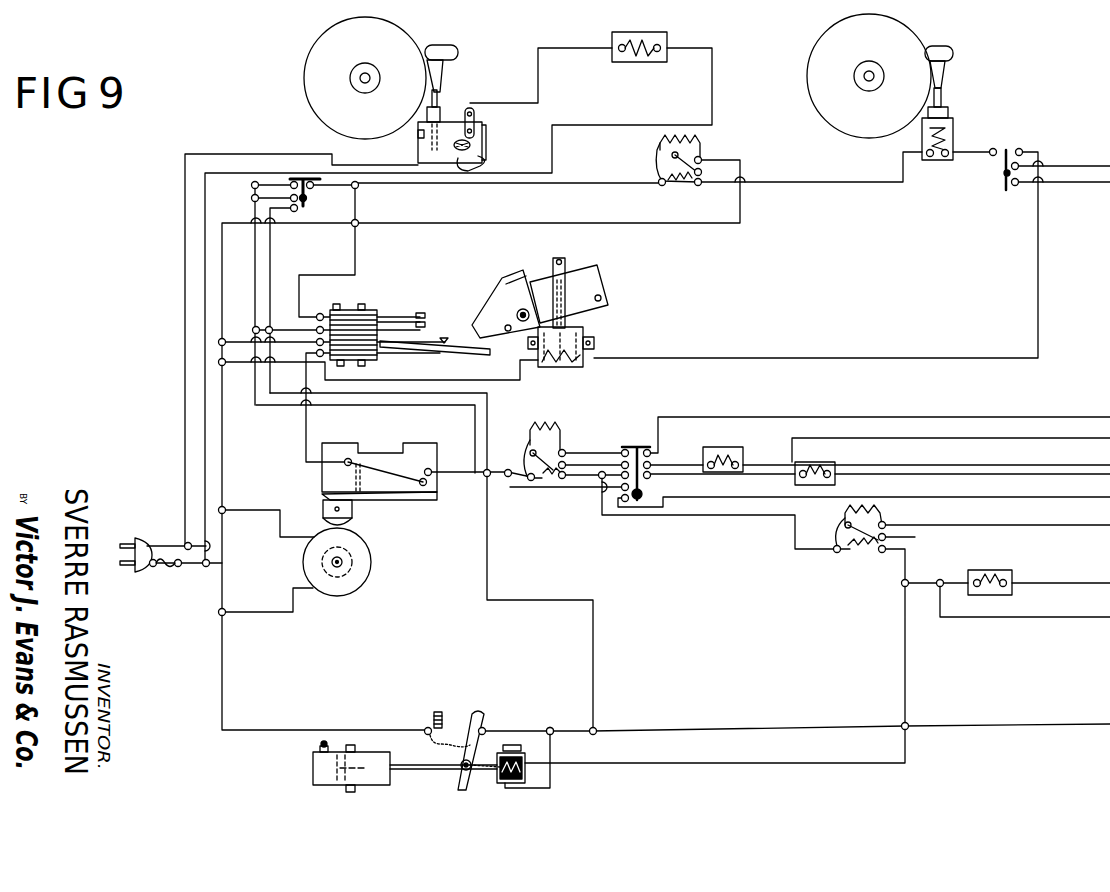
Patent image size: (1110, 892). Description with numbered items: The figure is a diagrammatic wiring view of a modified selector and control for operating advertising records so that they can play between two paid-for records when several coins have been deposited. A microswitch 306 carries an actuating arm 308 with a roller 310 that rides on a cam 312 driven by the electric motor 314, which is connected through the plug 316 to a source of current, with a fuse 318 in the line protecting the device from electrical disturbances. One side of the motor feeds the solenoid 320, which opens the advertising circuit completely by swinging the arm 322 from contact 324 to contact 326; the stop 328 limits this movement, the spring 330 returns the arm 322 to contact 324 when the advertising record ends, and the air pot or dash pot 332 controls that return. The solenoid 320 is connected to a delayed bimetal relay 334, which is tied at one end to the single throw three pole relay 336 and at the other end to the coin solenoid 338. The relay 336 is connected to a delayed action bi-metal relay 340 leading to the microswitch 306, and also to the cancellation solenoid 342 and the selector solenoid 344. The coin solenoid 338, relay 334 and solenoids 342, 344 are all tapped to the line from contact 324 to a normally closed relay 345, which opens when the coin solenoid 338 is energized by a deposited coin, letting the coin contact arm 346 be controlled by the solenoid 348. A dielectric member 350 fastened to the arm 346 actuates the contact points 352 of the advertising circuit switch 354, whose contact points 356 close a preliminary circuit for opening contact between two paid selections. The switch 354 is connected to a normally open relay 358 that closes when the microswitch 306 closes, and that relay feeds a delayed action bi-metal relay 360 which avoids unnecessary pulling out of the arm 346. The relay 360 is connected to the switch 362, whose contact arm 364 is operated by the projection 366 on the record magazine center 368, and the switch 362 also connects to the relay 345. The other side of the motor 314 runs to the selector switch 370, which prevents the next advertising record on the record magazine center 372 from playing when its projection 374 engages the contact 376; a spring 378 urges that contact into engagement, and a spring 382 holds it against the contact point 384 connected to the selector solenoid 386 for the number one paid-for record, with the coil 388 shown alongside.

The microswitch 306 is at (420, 445).
The actuating arm 308 is at (380, 498).
The roller 310 is at (352, 518).
The cam 312 is at (352, 580).
The electric motor 314 is at (355, 564).
The plug 316 is at (138, 575).
The fuse 318 is at (168, 570).
The solenoid 320 is at (527, 757).
The arm 322 is at (480, 712).
The contact 324 is at (485, 730).
The contact 326 is at (426, 728).
The stop 328 is at (439, 712).
The spring 330 is at (546, 730).
The air pot or dash pot 332 is at (330, 755).
The delayed bimetal relay 334 is at (884, 514).
The single throw three pole relay 336 is at (633, 446).
The coin solenoid 338 is at (976, 571).
The delayed action bi-metal relay 340 is at (546, 428).
The cancellation solenoid 342 is at (718, 447).
The selector solenoid 344 is at (836, 463).
The relay 345 is at (1036, 153).
The coin contact arm 346 is at (575, 258).
The solenoid 348 is at (585, 340).
The dielectric member 350 is at (600, 283).
The contact points 352 is at (448, 354).
The advertising circuit switch 354 is at (365, 310).
The contact points 356 is at (421, 320).
The relay 358 is at (306, 204).
The delayed action bi-metal relay 360 is at (706, 155).
The switch 362 is at (953, 126).
The contact arm 364 is at (944, 98).
The projection 366 is at (944, 75).
The record magazine center 368 is at (868, 125).
The selector switch 370 is at (478, 135).
The record magazine center 372 is at (320, 48).
The projection 374 is at (437, 75).
The contact 376 is at (445, 100).
The spring 378 is at (420, 157).
The spring 382 is at (478, 168).
The contact point 384 is at (472, 108).
The selector solenoid 386 is at (640, 62).
The coil 388 is at (478, 154).